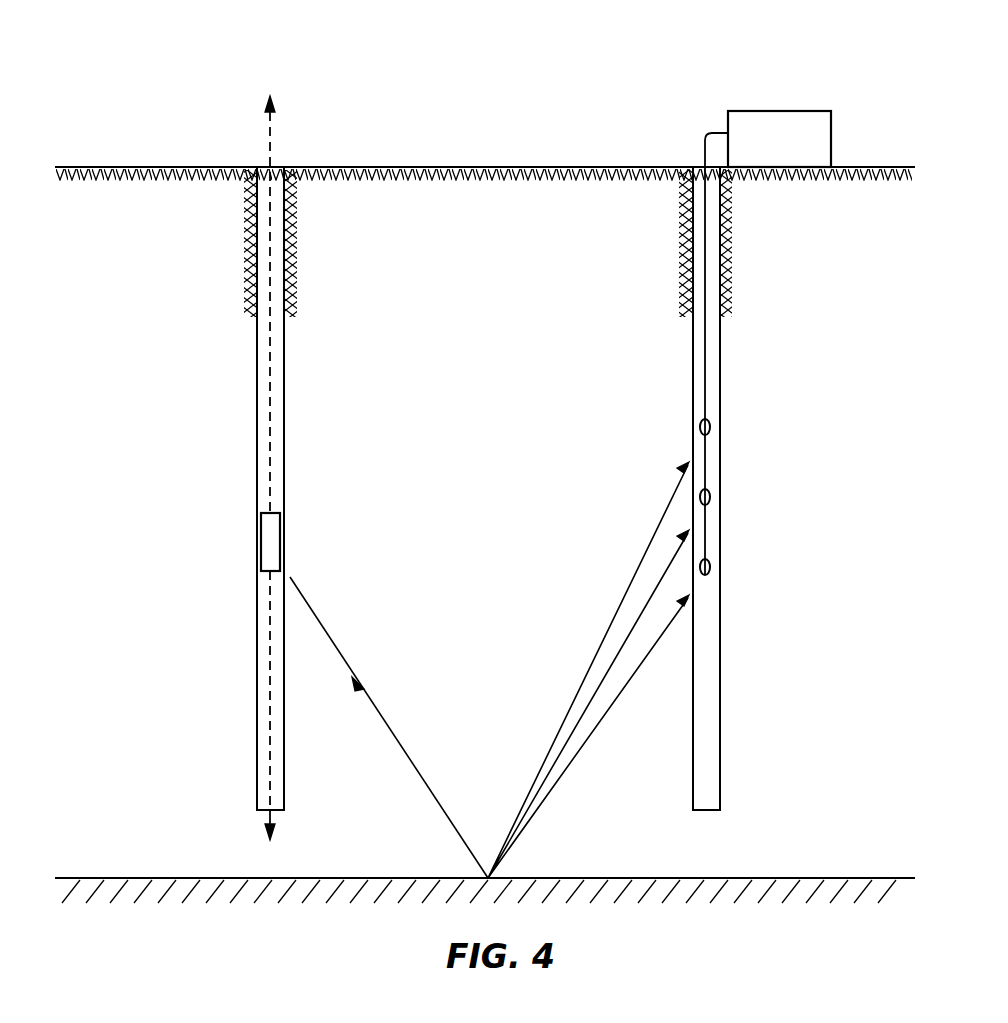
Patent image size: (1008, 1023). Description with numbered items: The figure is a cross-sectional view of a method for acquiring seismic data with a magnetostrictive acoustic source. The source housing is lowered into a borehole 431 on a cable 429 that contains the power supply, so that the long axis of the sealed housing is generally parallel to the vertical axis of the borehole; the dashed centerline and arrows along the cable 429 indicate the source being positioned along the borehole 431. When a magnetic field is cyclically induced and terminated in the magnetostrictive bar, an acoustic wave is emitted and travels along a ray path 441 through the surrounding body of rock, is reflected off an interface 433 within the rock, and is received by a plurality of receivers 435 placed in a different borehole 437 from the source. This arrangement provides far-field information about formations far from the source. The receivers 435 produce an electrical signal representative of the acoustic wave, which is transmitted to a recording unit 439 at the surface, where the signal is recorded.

The cable 429 is at (270, 140).
The first borehole with seismic source 431 is at (258, 780).
The interface 433 is at (760, 877).
The receivers 435 is at (730, 418).
The different borehole 437 is at (713, 743).
The recording unit 439 is at (798, 111).
The seismic ray path 441 is at (327, 633).